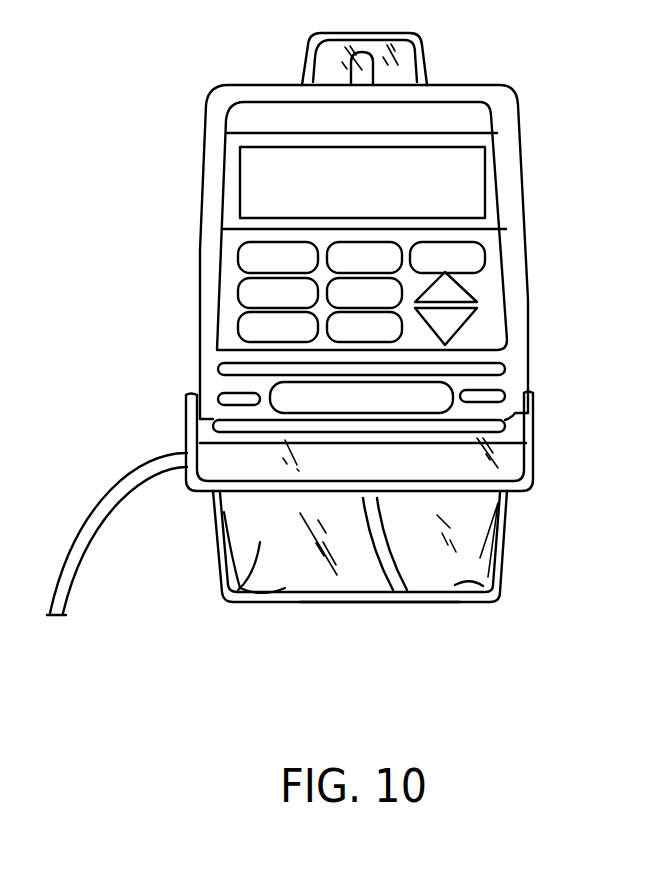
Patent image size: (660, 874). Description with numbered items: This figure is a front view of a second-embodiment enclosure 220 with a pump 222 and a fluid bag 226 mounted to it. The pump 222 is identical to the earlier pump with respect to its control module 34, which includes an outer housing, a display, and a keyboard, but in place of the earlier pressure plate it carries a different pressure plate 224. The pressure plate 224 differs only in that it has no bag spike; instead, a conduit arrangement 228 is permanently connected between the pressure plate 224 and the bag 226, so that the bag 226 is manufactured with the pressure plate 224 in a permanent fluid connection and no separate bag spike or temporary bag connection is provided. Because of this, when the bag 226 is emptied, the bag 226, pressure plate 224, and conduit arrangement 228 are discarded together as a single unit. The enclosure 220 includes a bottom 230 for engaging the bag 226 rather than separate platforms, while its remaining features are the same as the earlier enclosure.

The pump 222 is at (442, 51).
The control module 34 is at (412, 278).
The enclosure 220 is at (419, 437).
The pressure plate 224 is at (407, 546).
The bag 226 is at (266, 590).
The conduit arrangement 228 is at (390, 550).
The bottom 230 is at (381, 635).